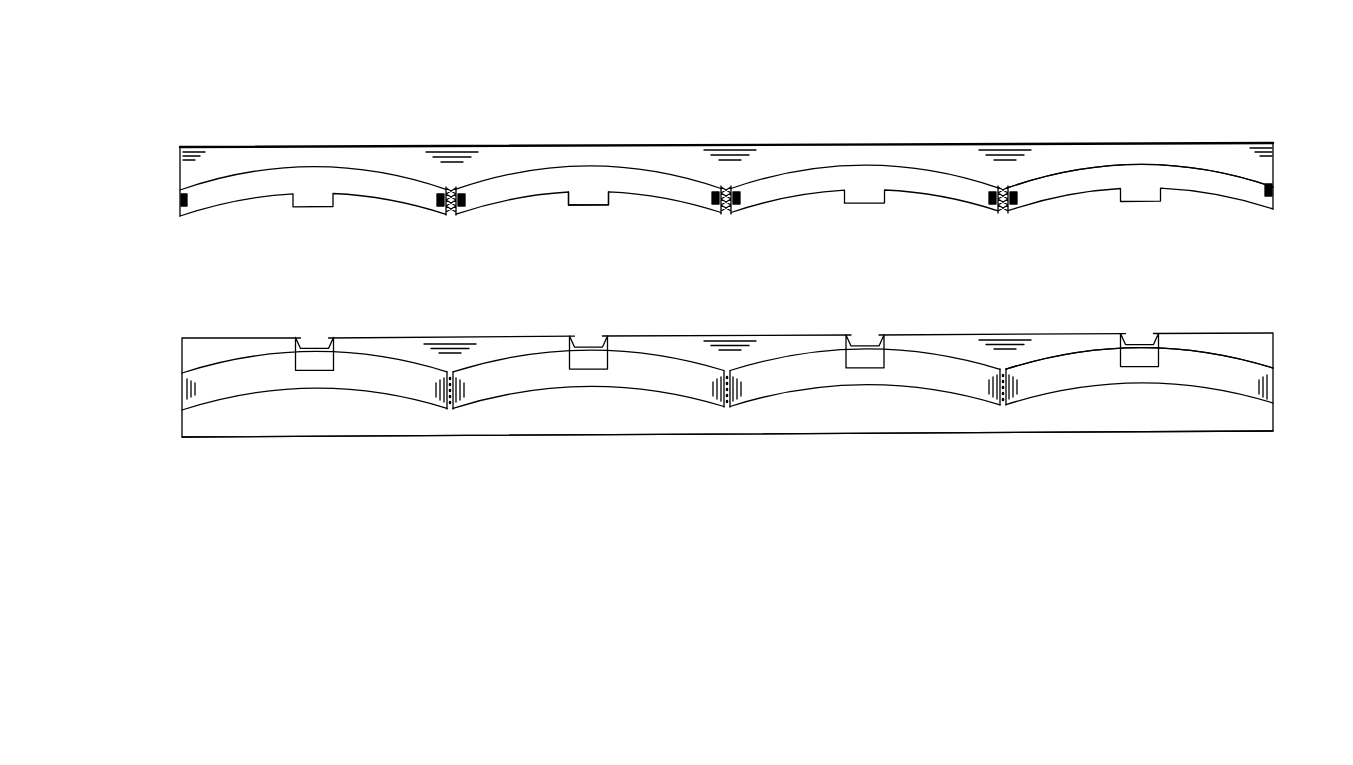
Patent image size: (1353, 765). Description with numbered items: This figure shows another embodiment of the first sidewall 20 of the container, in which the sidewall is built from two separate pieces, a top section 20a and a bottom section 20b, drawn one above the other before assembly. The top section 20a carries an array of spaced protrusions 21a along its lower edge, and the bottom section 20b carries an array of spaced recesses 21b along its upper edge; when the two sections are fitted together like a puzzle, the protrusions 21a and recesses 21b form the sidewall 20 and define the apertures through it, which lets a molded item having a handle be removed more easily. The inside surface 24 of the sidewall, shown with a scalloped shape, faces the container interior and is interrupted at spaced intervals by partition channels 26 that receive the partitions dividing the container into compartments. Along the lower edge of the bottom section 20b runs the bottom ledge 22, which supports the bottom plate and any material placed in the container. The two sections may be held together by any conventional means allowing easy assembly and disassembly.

The first sidewall 20 is at (362, 110).
The top section 20a is at (180, 170).
The bottom section 20b is at (182, 403).
The protrusions 21a is at (583, 205).
The recesses 21b is at (866, 336).
The bottom ledge 22 is at (583, 421).
The inside surface 24 is at (1180, 178).
The partition channels 26 is at (723, 373).